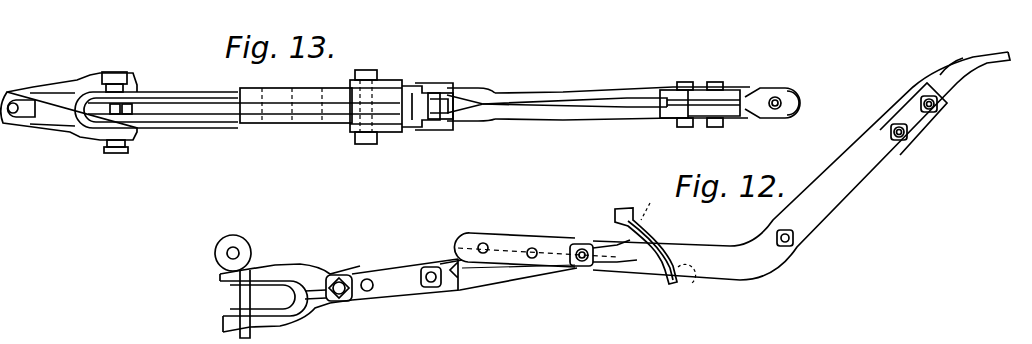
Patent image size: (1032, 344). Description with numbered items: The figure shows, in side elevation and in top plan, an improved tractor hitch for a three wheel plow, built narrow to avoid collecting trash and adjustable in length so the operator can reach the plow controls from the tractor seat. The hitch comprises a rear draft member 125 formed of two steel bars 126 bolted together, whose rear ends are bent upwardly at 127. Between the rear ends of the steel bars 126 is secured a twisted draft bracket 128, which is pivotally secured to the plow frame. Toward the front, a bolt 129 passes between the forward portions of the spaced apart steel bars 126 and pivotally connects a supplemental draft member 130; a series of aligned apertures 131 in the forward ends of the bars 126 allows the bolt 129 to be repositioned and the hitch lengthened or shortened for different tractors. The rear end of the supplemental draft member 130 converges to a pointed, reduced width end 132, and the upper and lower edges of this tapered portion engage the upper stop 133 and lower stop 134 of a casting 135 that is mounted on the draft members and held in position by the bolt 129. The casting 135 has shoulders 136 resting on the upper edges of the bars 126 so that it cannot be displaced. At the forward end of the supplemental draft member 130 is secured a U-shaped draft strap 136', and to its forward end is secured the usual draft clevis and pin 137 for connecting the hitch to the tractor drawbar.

In FIG. 13, the rear draft member 125 is at (603, 90).
In FIG. 12, the rear draft member 125 is at (762, 272).
In FIG. 13, the steel bars 126 is at (538, 100).
In FIG. 12, the upwardly bent rear ends 127 is at (847, 166).
In FIG. 13, the twisted draft bracket 128 is at (770, 92).
In FIG. 12, the twisted draft bracket 128 is at (958, 76).
In FIG. 13, the bolt 129 is at (366, 146).
In FIG. 12, the bolt 129 is at (582, 248).
In FIG. 13, the supplemental draft member 130 is at (231, 122).
In FIG. 12, the supplemental draft member 130 is at (446, 258).
In FIG. 13, the sleeve 131 is at (283, 123).
In FIG. 12, the sleeve 131 is at (531, 248).
In FIG. 13, the pointed end 132 is at (438, 72).
In FIG. 12, the pointed end 132 is at (678, 244).
In FIG. 13, the upper stop 133 is at (433, 126).
In FIG. 12, the upper stop 133 is at (639, 204).
In FIG. 12, the lower stop 134 is at (690, 285).
In FIG. 13, the casting 135 is at (396, 80).
In FIG. 12, the casting 135 is at (622, 262).
In FIG. 13, the shoulders 136 is at (473, 89).
In FIG. 13, the U-shaped draft strap 136' is at (156, 126).
In FIG. 12, the U-shaped draft strap 136' is at (451, 268).
In FIG. 13, the draft clevis and pin 137 is at (16, 100).
In FIG. 12, the draft clevis and pin 137 is at (277, 248).